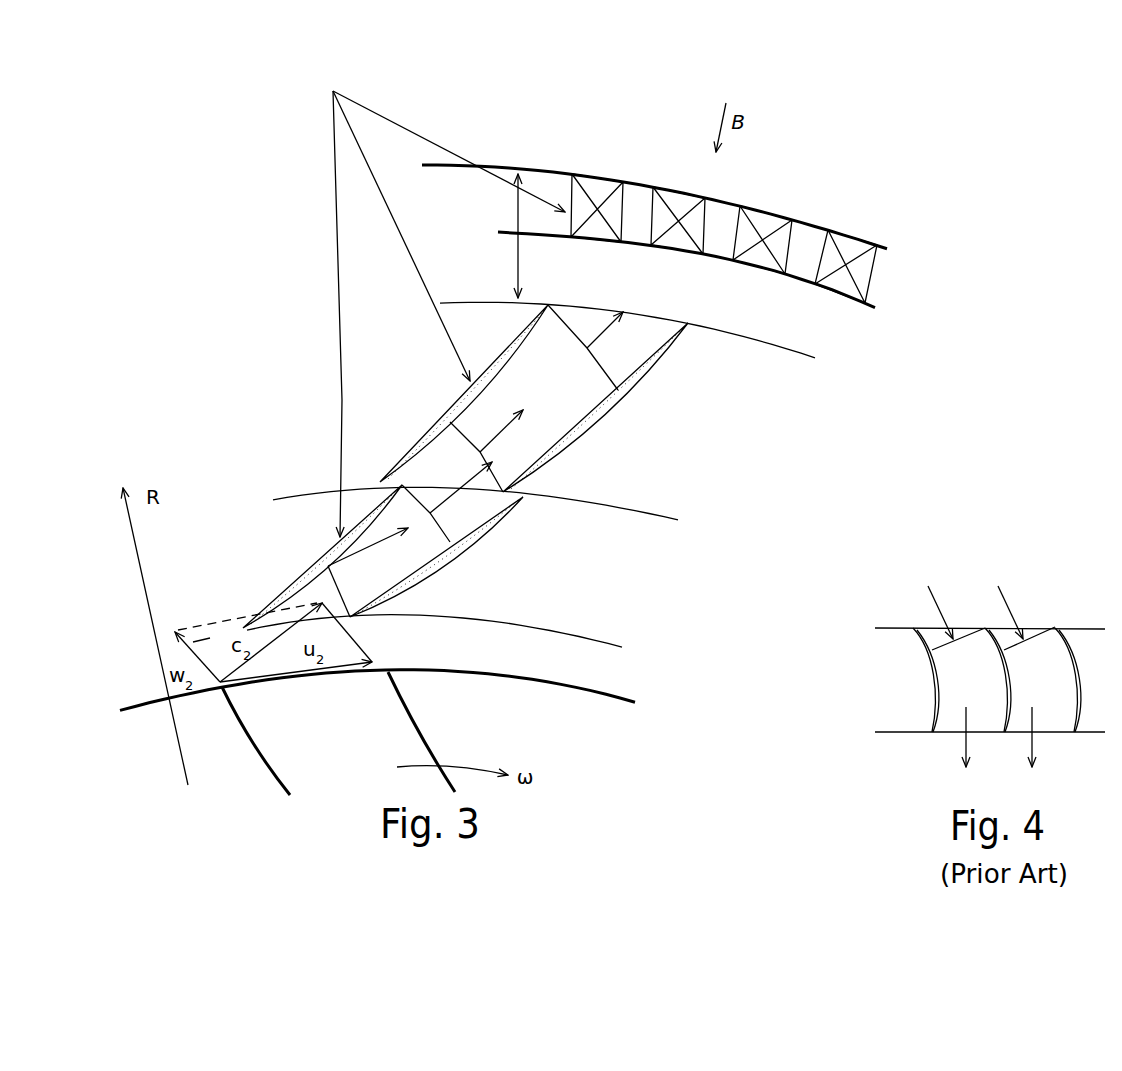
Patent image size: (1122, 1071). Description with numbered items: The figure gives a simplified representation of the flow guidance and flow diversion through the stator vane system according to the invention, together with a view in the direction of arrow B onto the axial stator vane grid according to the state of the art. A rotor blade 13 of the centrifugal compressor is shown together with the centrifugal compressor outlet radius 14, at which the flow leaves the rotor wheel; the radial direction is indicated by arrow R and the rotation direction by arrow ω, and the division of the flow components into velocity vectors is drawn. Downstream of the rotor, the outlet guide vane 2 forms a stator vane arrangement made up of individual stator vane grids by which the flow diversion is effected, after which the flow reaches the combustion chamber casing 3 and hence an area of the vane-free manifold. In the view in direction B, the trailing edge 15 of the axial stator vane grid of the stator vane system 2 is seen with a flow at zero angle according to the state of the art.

The outlet guide vane 2 is at (333, 91).
The combustion chamber casing 3 is at (654, 210).
The rotor blade 13 is at (433, 722).
The centrifugal compressor outlet radius 14 is at (532, 672).
The trailing edge of stator vane grid 15 is at (700, 222).